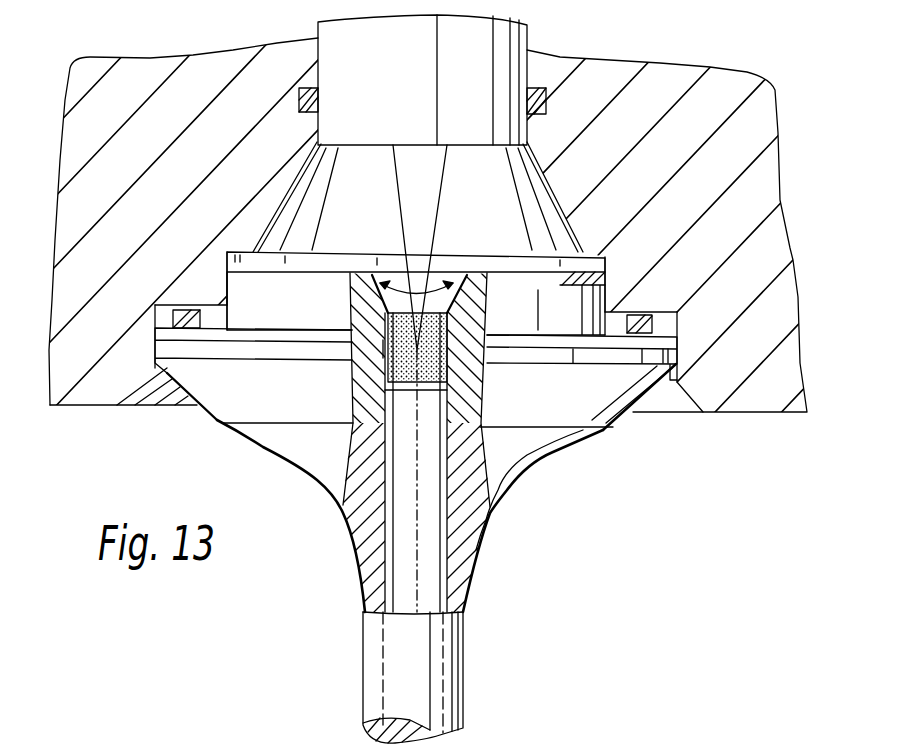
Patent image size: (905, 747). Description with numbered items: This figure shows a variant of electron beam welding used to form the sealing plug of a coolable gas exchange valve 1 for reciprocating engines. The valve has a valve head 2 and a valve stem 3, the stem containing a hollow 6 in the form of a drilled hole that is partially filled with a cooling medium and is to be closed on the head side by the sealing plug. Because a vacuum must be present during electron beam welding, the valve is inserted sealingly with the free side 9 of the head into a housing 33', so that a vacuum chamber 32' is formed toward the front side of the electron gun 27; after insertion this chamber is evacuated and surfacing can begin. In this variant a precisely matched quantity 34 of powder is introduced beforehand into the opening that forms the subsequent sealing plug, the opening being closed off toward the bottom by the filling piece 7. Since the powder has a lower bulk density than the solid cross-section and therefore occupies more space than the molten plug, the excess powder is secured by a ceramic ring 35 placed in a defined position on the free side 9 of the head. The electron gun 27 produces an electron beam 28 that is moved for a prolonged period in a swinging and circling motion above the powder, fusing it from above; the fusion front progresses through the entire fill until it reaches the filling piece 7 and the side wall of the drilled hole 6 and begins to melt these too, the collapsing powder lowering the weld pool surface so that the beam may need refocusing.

The nozzle device 1 is at (365, 658).
The valve head 2 is at (409, 442).
The valve stem 3 is at (421, 695).
The hollow 6 is at (441, 501).
The filling piece 7 is at (427, 382).
The free side of the head 9 is at (562, 334).
The electron gun 27 is at (385, 97).
The electron beam 28 is at (425, 207).
The vacuum chamber 32' is at (416, 238).
The housing 33' is at (452, 373).
The quantity of powder 34 is at (437, 360).
The ceramic ring 35 is at (306, 319).